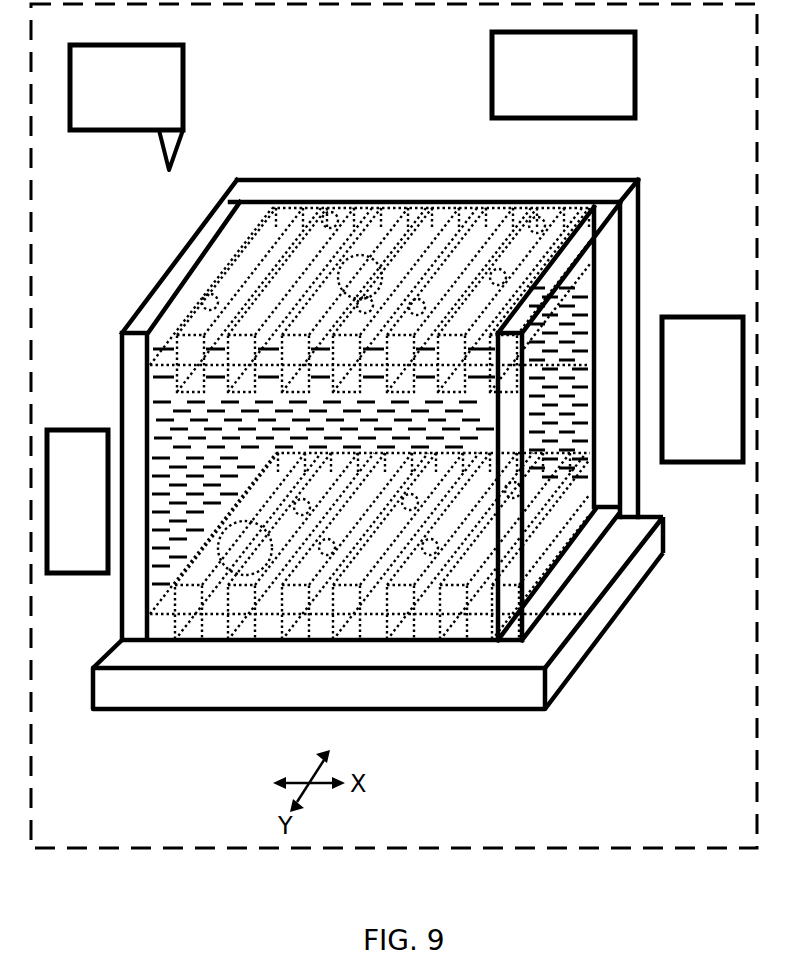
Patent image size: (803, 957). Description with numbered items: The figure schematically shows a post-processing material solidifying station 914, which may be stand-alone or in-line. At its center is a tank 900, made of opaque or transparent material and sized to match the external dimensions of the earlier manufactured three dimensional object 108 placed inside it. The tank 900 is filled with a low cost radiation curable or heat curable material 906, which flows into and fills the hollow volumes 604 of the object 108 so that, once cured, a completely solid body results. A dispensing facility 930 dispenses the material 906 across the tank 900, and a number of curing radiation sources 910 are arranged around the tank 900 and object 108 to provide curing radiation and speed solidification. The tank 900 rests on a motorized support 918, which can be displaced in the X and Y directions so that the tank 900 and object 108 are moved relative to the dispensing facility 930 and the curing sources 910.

The tank 900 is at (350, 180).
The material solidifying station 914 is at (643, 170).
The curing radiation sources 910 is at (395, 302).
The dispensing facility 930 is at (126, 107).
The 3D object 108 is at (218, 273).
The hollow volumes 604 is at (403, 640).
The low cost radiation curable or heat curable material 906 is at (177, 452).
The motorized support 918 is at (127, 698).